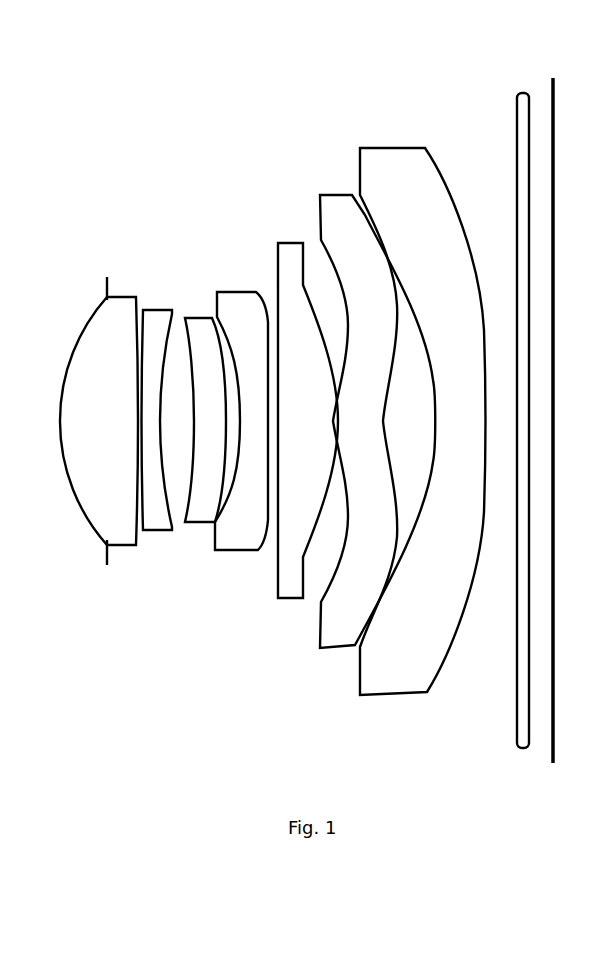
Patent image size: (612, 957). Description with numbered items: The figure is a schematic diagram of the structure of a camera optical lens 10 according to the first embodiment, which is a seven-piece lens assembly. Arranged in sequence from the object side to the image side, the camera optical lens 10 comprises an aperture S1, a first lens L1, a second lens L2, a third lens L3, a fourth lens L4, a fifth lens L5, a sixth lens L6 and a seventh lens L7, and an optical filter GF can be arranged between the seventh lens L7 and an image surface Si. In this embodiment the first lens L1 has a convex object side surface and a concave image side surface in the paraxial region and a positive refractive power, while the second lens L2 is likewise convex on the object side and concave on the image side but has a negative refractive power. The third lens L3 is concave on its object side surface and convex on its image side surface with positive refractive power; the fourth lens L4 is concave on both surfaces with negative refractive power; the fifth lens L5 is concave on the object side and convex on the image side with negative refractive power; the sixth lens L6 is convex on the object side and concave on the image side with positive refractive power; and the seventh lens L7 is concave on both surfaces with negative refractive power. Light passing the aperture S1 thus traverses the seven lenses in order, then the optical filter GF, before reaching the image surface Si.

The camera optical lens 10 is at (333, 50).
The aperture S1 is at (90, 416).
The first lens L1 is at (99, 400).
The second lens L2 is at (156, 405).
The third lens L3 is at (204, 405).
The fourth lens L4 is at (241, 405).
The fifth lens L5 is at (306, 409).
The sixth lens L6 is at (377, 410).
The seventh lens L7 is at (423, 405).
The optical filter GF is at (517, 407).
The image surface Si is at (548, 412).